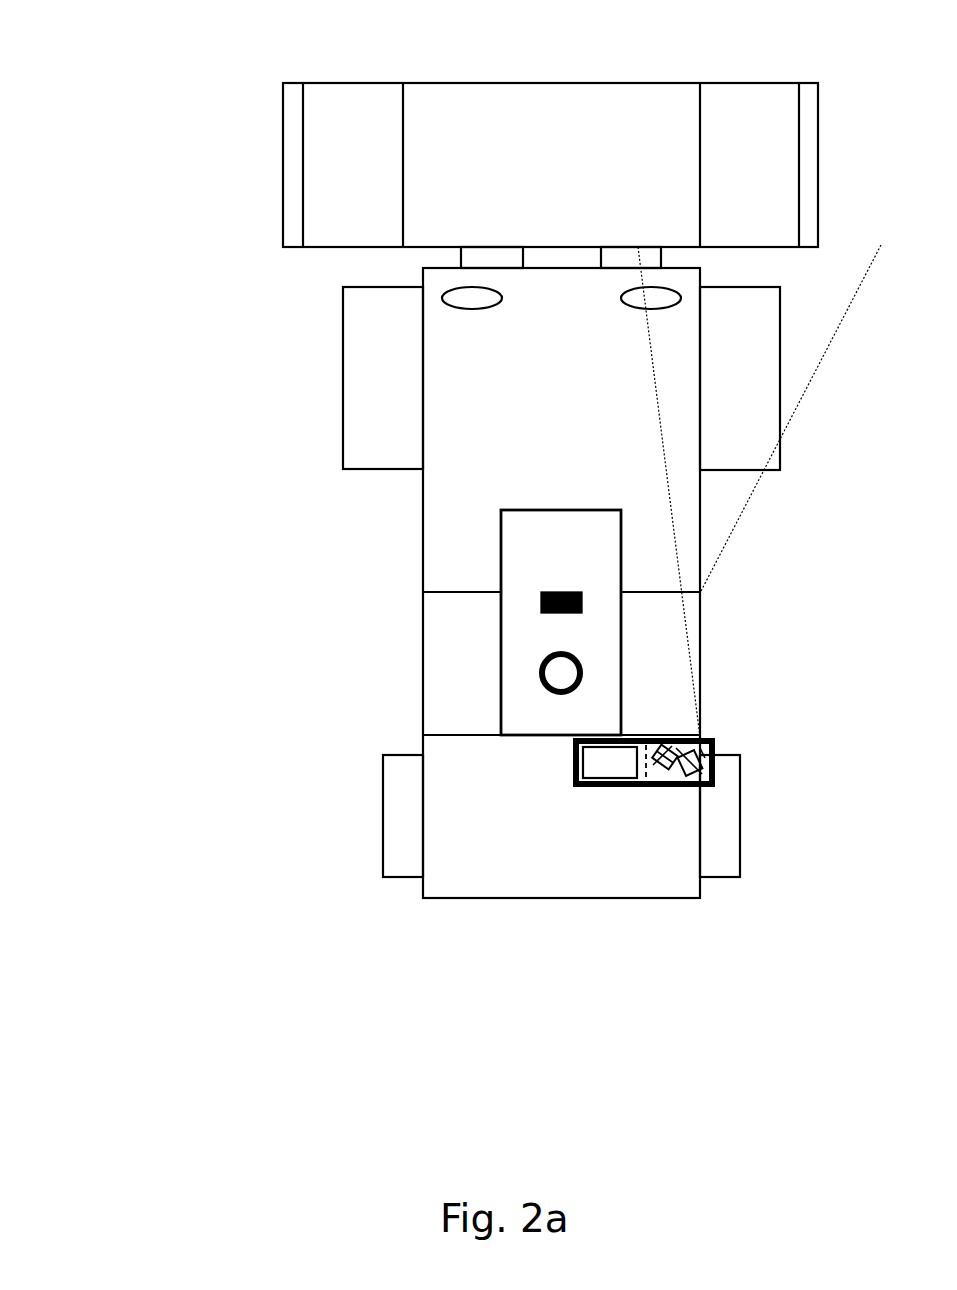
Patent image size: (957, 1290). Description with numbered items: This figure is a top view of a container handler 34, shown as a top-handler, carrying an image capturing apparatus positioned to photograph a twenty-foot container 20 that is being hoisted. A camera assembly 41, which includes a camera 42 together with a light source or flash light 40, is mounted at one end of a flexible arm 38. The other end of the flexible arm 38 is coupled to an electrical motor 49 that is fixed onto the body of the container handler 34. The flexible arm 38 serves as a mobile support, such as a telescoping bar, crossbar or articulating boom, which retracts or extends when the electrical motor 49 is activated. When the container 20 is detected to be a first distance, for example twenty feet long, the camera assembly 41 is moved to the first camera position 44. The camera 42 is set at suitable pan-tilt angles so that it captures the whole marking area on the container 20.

The container 20 is at (715, 82).
The container handler 34 is at (278, 577).
The flexible arm 38 is at (592, 787).
The light source 40 is at (660, 780).
The camera assembly 41 is at (708, 733).
The camera 42 is at (707, 787).
The first camera position 44 is at (680, 808).
The electrical motor 49 is at (587, 750).